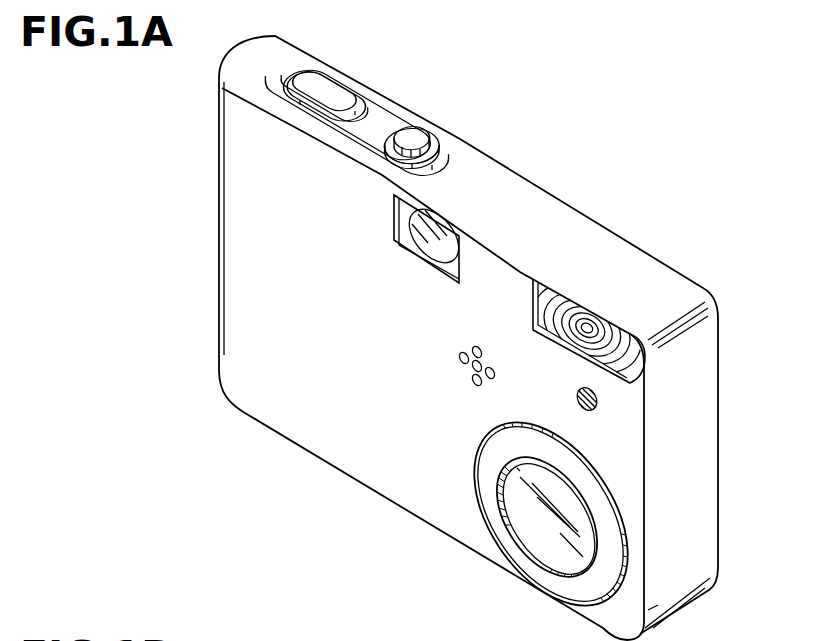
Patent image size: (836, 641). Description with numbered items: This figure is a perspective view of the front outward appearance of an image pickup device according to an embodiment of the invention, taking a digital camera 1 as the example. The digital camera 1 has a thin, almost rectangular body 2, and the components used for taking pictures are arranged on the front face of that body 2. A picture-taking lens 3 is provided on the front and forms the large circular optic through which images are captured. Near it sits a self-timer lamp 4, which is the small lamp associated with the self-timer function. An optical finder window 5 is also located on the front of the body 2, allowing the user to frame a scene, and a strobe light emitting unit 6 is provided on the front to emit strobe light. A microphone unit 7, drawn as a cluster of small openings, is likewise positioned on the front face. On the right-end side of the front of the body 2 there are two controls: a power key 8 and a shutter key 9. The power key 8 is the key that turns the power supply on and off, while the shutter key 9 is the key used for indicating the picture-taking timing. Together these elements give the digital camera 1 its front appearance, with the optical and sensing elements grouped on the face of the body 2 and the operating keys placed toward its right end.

The digital camera 1 is at (491, 338).
The body 2 is at (718, 368).
The picture-taking lens 3 is at (533, 515).
The self-timer lamp 4 is at (600, 400).
The optical finder window 5 is at (437, 232).
The strobe light emitting unit 6 is at (588, 328).
The microphone unit 7 is at (460, 369).
The power key 8 is at (417, 135).
The shutter key 9 is at (352, 97).